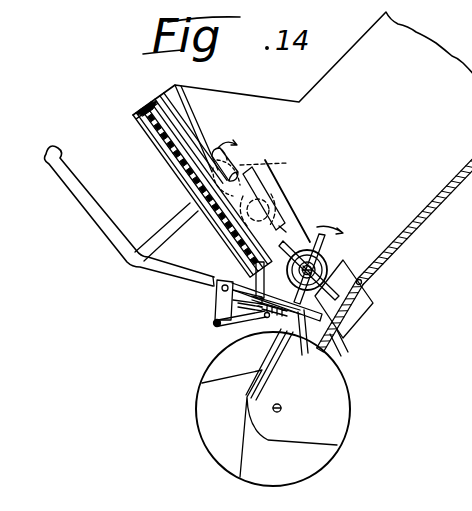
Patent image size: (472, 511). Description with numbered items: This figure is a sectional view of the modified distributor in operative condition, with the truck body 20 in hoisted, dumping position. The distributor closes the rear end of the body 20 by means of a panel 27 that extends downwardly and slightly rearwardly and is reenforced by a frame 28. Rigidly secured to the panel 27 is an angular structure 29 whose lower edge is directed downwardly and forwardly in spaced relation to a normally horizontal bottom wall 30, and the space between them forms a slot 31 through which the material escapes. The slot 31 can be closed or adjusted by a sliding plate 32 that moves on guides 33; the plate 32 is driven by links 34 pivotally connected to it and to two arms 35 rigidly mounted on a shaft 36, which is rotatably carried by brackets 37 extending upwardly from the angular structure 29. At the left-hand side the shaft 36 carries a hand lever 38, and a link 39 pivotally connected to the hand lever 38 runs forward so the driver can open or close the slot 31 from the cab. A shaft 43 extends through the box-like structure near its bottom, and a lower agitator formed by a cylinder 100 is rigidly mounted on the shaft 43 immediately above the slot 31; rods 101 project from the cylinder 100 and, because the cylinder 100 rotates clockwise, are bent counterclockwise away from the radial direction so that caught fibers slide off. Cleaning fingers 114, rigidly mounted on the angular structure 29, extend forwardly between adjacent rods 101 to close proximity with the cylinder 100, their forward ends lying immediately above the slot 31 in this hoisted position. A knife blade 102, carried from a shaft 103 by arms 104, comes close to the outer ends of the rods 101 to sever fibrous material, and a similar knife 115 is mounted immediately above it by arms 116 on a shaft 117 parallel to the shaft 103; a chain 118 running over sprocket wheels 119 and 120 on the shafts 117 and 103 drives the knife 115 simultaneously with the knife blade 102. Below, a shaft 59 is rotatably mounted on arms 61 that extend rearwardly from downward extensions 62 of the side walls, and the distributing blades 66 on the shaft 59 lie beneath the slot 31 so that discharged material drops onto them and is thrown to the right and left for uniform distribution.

The truck body 20 is at (332, 84).
The panel 27 is at (182, 150).
The frame 28 is at (134, 118).
The angular structure 29 is at (266, 280).
The bottom wall 30 is at (345, 317).
The slot 31 is at (302, 352).
The sliding plate 32 is at (278, 320).
The guides 33 is at (283, 352).
The links 34 is at (236, 328).
The arms 35 is at (222, 305).
The shaft 36 is at (228, 281).
The brackets 37 is at (213, 284).
The hand lever 38 is at (98, 205).
The link 39 is at (176, 232).
The shaft 43 is at (328, 262).
The shaft 59 is at (281, 409).
The arms 61 is at (342, 355).
The downward extensions 62 is at (360, 306).
The distributing blades 66 is at (327, 453).
The cylinder 100 is at (306, 238).
The rods 101 is at (362, 282).
The knife blade 102 is at (290, 215).
The shaft 103 is at (252, 180).
The arms 104 is at (291, 186).
The cleaning fingers 114 is at (335, 338).
The knife 115 is at (238, 148).
The arms 116 is at (245, 165).
The shaft 117 is at (267, 167).
The chain 118 is at (317, 162).
The sprocket wheel 119 is at (195, 184).
The sprocket wheel 120 is at (230, 240).